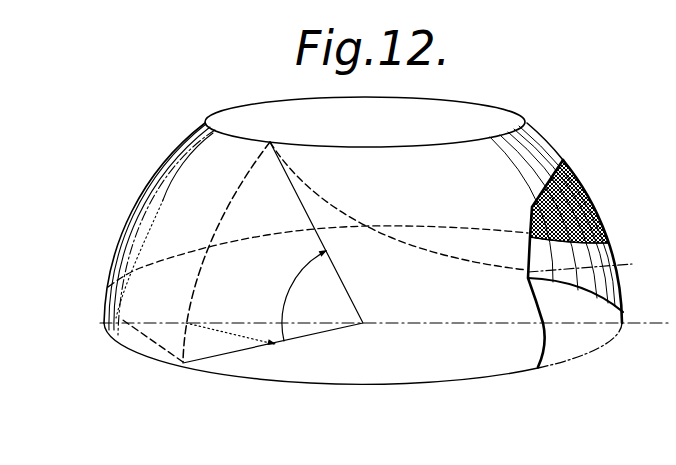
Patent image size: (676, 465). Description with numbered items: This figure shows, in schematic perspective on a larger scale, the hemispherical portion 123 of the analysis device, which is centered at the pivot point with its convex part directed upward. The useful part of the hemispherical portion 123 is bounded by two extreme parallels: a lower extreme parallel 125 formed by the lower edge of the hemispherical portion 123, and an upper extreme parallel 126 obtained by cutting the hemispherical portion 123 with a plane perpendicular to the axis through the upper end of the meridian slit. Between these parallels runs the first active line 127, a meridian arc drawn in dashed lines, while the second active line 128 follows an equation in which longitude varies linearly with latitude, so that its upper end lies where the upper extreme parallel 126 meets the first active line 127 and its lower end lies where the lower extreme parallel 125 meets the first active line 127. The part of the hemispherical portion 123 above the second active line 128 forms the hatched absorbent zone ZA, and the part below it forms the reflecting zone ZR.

The hemispherical portion 123 is at (598, 210).
The lower extreme parallel 125 is at (381, 385).
The upper extreme parallel 126 is at (340, 146).
The first active line 127 is at (230, 252).
The second active line 128 is at (493, 255).
The absorbent zone ZA is at (569, 176).
The reflecting zone ZR is at (595, 267).